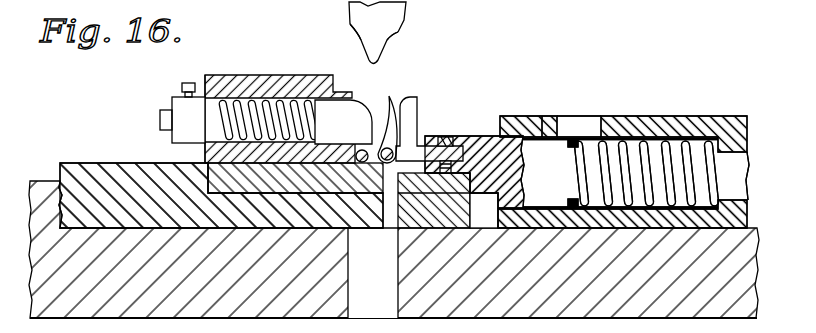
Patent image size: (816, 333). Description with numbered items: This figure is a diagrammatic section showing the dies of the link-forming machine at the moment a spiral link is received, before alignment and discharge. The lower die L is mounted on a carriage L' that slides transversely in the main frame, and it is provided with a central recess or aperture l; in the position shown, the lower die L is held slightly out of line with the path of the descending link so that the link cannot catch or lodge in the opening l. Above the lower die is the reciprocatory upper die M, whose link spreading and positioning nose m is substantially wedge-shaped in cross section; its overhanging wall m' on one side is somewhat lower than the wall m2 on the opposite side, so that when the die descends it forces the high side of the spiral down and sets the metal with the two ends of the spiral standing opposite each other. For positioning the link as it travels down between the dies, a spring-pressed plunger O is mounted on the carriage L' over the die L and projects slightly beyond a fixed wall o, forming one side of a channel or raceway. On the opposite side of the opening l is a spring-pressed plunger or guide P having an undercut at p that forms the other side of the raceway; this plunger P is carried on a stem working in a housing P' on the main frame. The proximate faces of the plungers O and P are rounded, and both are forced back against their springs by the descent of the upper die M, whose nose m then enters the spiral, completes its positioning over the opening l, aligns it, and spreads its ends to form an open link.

The carriage L' is at (221, 174).
The lower die L is at (256, 165).
The central recess or aperture l is at (391, 178).
The fixed wall o is at (357, 155).
The spring-pressed plunger O is at (266, 119).
The undercut p is at (386, 120).
The spring-pressed plunger or guide P is at (429, 133).
The housing P' is at (587, 155).
The reciprocatory die M is at (392, 15).
The link spreading and positioning nose m is at (395, 57).
The overhanging wall m' is at (421, 44).
The wall m2 is at (358, 30).